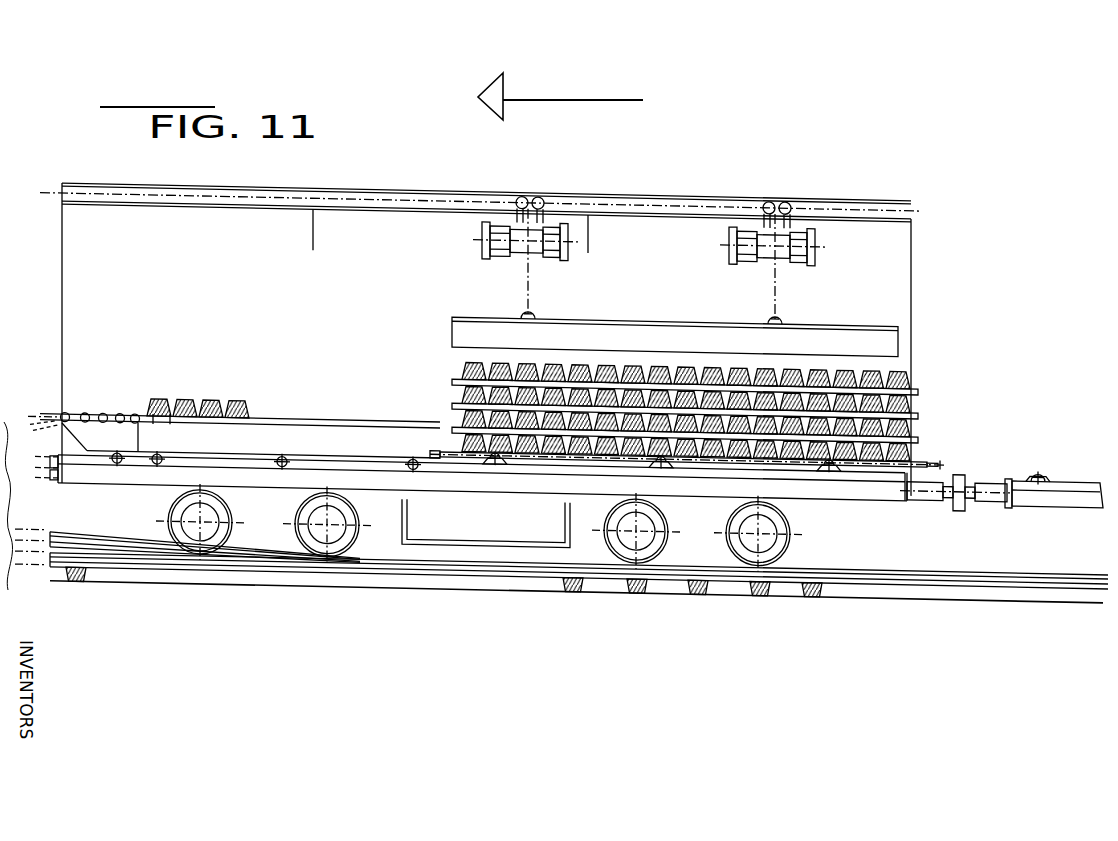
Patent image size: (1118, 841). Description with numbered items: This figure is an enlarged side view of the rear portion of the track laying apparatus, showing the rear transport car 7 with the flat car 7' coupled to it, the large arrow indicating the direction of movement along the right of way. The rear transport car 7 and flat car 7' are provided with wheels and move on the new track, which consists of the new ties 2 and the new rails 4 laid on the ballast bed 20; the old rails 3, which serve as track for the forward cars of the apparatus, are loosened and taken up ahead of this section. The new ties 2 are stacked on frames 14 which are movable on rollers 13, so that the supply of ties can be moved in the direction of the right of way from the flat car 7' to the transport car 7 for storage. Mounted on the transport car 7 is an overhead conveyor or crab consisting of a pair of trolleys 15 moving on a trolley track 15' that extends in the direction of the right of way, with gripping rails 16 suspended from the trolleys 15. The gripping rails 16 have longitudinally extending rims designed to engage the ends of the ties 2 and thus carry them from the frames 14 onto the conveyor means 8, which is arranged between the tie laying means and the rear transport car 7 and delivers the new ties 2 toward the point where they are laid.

The new ties 2 is at (238, 402).
The old rails 3 is at (80, 543).
The new rails 4 is at (143, 558).
The rear transport car 7 is at (471, 550).
The flat car 7' is at (1001, 565).
The conveyor means 8 is at (110, 414).
The rollers 13 is at (492, 463).
The frames 14 is at (833, 477).
The trolleys 15 is at (631, 236).
The trolley tracks 15' is at (481, 325).
The gripping rails 16 is at (473, 328).
The ballast bed 20 is at (863, 603).